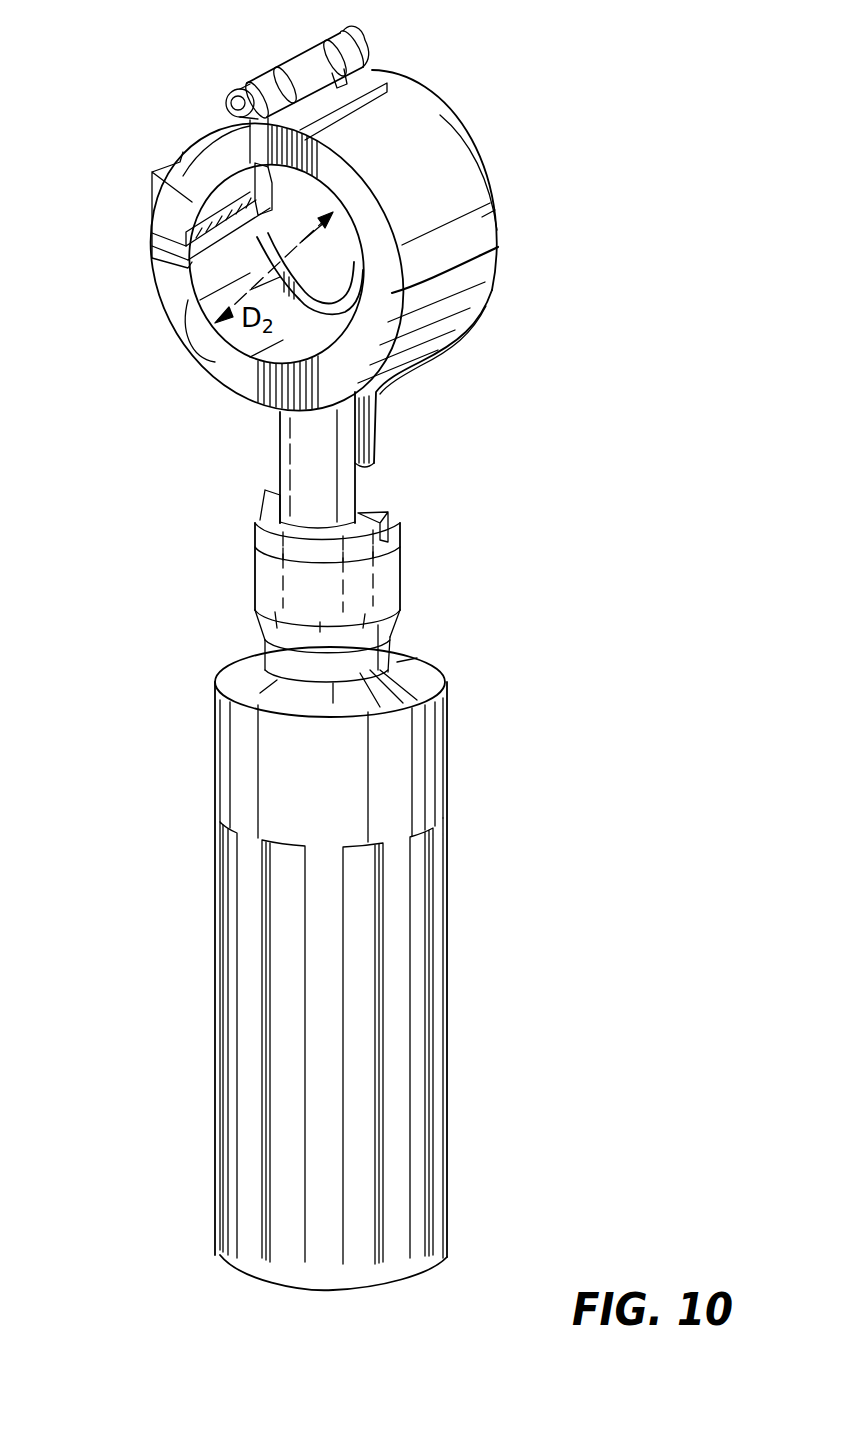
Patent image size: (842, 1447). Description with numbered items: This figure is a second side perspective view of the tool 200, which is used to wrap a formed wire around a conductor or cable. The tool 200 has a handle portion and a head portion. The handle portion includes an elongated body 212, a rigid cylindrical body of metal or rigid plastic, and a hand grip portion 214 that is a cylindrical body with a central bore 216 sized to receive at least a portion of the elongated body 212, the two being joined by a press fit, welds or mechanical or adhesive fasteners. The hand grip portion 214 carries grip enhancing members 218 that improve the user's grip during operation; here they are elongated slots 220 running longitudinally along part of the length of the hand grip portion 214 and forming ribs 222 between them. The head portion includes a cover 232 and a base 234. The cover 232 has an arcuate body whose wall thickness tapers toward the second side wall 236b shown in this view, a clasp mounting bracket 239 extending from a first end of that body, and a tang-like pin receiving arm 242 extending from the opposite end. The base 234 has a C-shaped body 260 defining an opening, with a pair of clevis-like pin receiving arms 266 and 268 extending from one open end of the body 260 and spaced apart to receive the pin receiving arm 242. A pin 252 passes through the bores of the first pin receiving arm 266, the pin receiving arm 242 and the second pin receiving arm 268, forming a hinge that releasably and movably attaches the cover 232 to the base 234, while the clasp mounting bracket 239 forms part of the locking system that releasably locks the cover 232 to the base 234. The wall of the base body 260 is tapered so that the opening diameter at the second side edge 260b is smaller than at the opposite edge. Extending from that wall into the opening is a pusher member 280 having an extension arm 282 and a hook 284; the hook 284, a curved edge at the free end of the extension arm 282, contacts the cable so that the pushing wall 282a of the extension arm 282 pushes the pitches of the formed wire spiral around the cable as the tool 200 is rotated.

The tool 200 is at (597, 394).
The elongated body 212 is at (373, 456).
The hand grip portion 214 is at (328, 1005).
The central bore 216 is at (262, 538).
The grip enhancing members 218 is at (227, 1198).
The elongated slots 220 is at (283, 1286).
The ribs 222 is at (243, 1270).
The cover 232 is at (154, 154).
The base 234 is at (497, 189).
The second side wall 236b is at (186, 153).
The clasp mounting bracket 239 is at (150, 186).
The pin receiving arm 242 is at (292, 58).
The pin 252 is at (366, 44).
The C-shaped body 260 is at (485, 243).
The second side edge 260b is at (215, 362).
The first pin receiving arm 266 is at (250, 86).
The second pin receiving arm 268 is at (332, 38).
The pusher member 280 is at (298, 210).
The extension arm 282 is at (490, 258).
The pushing wall 282a is at (332, 258).
The hook 284 is at (185, 280).